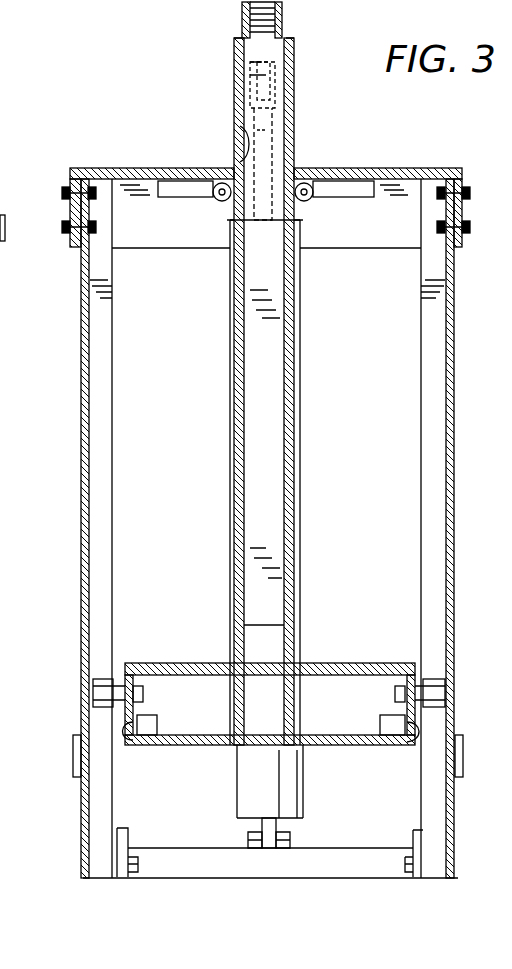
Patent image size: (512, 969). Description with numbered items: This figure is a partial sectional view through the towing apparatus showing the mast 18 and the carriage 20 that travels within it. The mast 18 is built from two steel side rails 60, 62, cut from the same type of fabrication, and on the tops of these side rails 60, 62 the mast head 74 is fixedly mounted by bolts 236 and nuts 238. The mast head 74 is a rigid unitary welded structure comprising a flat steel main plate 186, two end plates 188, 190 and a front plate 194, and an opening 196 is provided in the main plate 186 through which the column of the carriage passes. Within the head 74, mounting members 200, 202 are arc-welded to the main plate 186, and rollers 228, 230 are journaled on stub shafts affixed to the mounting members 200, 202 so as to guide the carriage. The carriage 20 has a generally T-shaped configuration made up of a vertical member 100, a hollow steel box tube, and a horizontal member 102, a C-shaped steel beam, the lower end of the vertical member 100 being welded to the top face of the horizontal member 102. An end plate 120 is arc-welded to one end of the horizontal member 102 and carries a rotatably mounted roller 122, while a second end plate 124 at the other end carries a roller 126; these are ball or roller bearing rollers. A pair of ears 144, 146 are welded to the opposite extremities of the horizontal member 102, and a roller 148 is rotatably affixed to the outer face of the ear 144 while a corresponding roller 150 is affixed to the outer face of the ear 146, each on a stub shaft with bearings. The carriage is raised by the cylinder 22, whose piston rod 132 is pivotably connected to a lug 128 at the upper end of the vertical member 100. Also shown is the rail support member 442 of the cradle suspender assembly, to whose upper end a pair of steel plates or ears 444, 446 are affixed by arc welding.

The mast 18 is at (78, 492).
The carriage 20 is at (220, 418).
The cylinder 22 is at (300, 296).
The side rail 60 is at (100, 428).
The side rail 62 is at (455, 426).
The mast head 74 is at (161, 166).
The vertical member 100 is at (303, 560).
The horizontal member 102 is at (202, 746).
The end plate 120 is at (150, 646).
The roller 122 is at (92, 690).
The second end plate 124 is at (412, 662).
The roller 126 is at (446, 690).
The lug 128 is at (294, 62).
The piston rod 132 is at (277, 122).
The ear 144 is at (158, 728).
The ear 146 is at (386, 722).
The roller 148 is at (122, 728).
The roller 150 is at (416, 742).
The main plate 186 is at (420, 168).
The end plate 188 is at (76, 243).
The end plate 190 is at (458, 242).
The front plate 194 is at (147, 238).
The opening 196 is at (240, 128).
The mounting member 200 is at (185, 190).
The mounting member 202 is at (350, 190).
The roller 228 is at (222, 202).
The roller 230 is at (305, 202).
The bolts 236 is at (62, 227).
The nuts 238 is at (92, 222).
The rail support member 442 is at (280, 370).
The ear 444 is at (242, 16).
The ear 446 is at (282, 18).